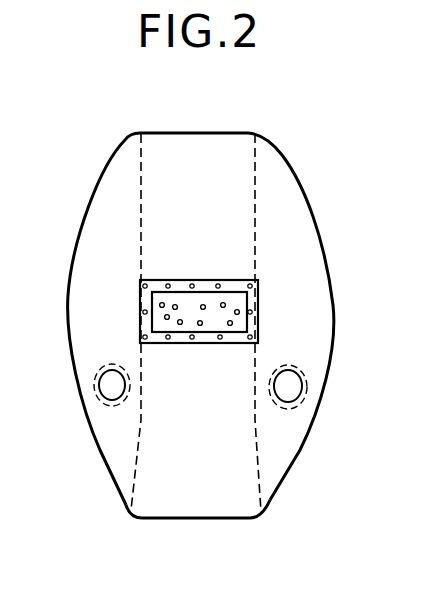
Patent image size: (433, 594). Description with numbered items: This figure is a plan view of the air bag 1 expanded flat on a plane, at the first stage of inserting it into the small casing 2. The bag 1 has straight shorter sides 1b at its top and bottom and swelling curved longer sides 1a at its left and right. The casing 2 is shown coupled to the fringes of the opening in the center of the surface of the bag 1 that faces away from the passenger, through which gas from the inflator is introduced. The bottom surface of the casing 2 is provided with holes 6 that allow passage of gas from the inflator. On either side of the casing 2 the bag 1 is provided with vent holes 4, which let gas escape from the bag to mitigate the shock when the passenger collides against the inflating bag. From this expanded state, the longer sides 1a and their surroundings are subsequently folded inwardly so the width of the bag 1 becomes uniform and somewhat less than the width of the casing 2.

The air bag 1 is at (202, 331).
The longer sides 1a is at (67, 318).
The shorter sides 1b is at (257, 121).
The casing 2 is at (259, 316).
The vent holes 4 is at (105, 394).
The holes 6 is at (175, 306).